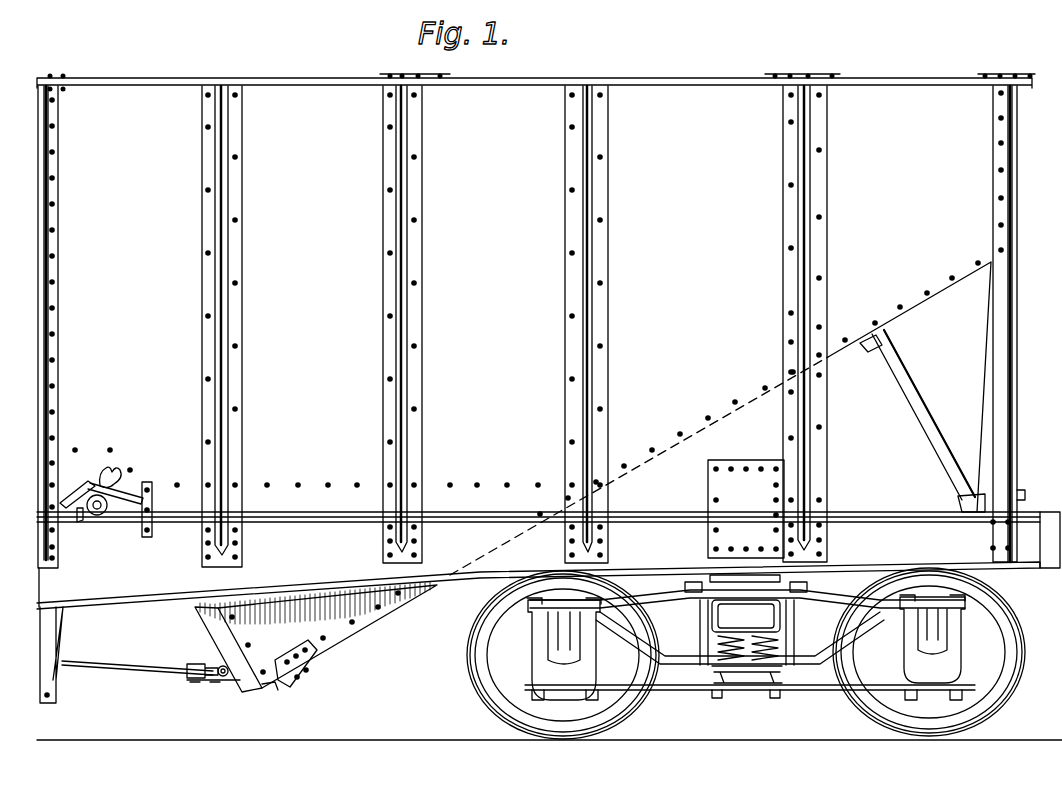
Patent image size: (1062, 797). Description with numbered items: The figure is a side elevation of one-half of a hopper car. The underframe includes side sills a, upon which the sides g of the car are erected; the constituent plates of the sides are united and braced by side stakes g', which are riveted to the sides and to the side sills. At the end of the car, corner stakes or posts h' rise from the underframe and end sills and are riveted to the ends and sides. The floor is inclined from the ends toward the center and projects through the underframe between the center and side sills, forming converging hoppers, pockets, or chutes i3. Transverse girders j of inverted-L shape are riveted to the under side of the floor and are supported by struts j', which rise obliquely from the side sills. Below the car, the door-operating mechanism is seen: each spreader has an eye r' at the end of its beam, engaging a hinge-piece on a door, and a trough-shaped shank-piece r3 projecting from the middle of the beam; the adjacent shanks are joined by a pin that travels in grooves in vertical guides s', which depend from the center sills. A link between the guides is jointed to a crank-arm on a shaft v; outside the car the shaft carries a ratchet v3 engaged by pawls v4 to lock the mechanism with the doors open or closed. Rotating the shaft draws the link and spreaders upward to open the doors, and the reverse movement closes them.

The sides g is at (450, 403).
The side stakes g' is at (527, 327).
The corner stakes or posts h' is at (909, 386).
The transverse girders j is at (859, 362).
The struts j' is at (928, 421).
The side sills a is at (1050, 512).
The vertical guides s' is at (69, 655).
The hoppers, pockets, or chutes i3 is at (316, 637).
The shank-piece r3 is at (119, 672).
The eye r' is at (207, 656).
The shaft v is at (113, 516).
The ratchet v3 is at (82, 522).
The pawls v4 is at (128, 493).